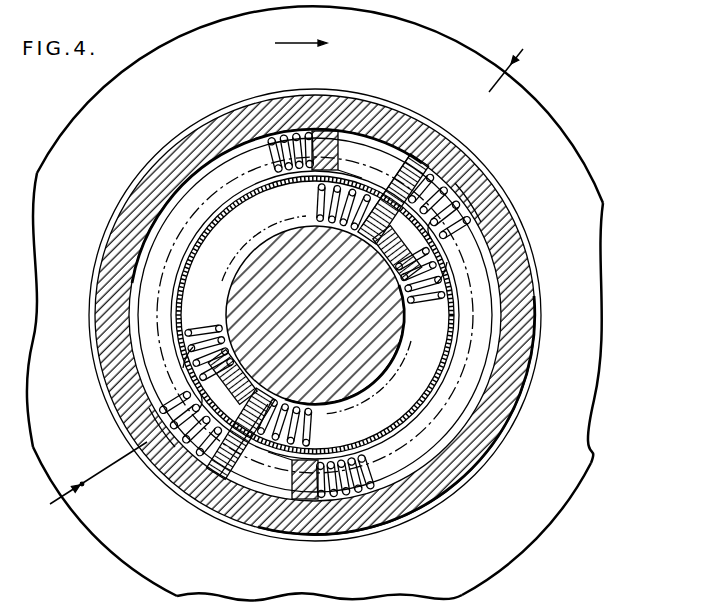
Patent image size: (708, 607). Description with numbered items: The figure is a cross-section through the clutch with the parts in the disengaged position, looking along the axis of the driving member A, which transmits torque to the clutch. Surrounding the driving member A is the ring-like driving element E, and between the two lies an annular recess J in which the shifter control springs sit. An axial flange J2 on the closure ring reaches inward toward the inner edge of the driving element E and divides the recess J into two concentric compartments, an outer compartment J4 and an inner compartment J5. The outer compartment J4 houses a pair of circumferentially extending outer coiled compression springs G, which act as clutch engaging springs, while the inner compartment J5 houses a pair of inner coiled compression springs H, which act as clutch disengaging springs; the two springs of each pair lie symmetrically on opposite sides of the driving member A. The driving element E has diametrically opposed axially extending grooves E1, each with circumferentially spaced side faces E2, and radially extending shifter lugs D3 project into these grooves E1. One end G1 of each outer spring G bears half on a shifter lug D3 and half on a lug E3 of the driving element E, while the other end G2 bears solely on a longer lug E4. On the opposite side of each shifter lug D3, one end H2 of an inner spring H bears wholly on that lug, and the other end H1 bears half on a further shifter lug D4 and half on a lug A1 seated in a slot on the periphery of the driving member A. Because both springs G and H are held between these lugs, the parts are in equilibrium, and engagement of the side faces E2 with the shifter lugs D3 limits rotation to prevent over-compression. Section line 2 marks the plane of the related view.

The driving element E is at (207, 128).
The axially extending groove E1 is at (375, 183).
The side face E2 is at (364, 184).
The lug E3 is at (432, 143).
The lug E4 is at (325, 143).
The outer coiled compression spring G is at (481, 222).
The end of outer spring G1 is at (452, 188).
The end of outer spring G2 is at (293, 132).
The shifter lug D3 is at (413, 166).
The shifter lug D4 is at (432, 240).
The inner coiled compression spring H is at (423, 298).
The end of inner spring H1 is at (437, 283).
The end of inner spring H2 is at (350, 215).
The annular recess J is at (474, 277).
The axial flange J2 is at (208, 236).
The spring containing compartment J4 is at (150, 326).
The spring containing compartment J5 is at (315, 315).
The driving member A is at (280, 256).
The lug A1 is at (392, 260).
The section line 2 is at (274, 278).